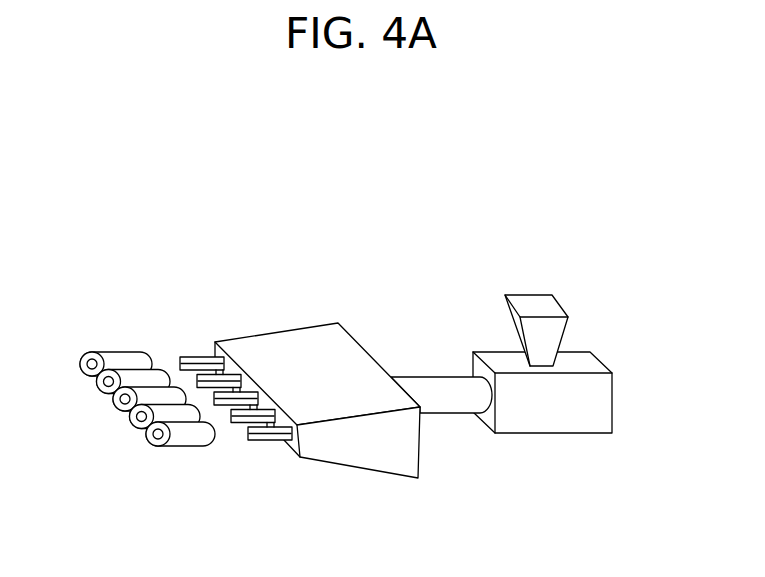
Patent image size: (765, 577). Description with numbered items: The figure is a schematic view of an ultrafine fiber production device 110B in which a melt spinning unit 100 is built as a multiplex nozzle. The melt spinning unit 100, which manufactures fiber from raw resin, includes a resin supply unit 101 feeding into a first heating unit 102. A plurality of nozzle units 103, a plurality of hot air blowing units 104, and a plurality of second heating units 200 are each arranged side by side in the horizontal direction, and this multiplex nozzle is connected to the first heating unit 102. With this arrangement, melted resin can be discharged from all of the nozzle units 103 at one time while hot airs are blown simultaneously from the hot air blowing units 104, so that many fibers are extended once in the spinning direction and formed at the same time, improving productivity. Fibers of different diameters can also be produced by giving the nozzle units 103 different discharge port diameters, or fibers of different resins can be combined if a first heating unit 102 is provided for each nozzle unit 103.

The ultrafine fiber production device 110B is at (160, 243).
The melt spinning unit 100 is at (615, 270).
The resin supply unit 101 is at (552, 337).
The first heating unit 102 is at (452, 403).
The nozzle unit 103 is at (219, 405).
The hot air blowing unit 104 is at (262, 440).
The second heating unit 200 is at (155, 375).